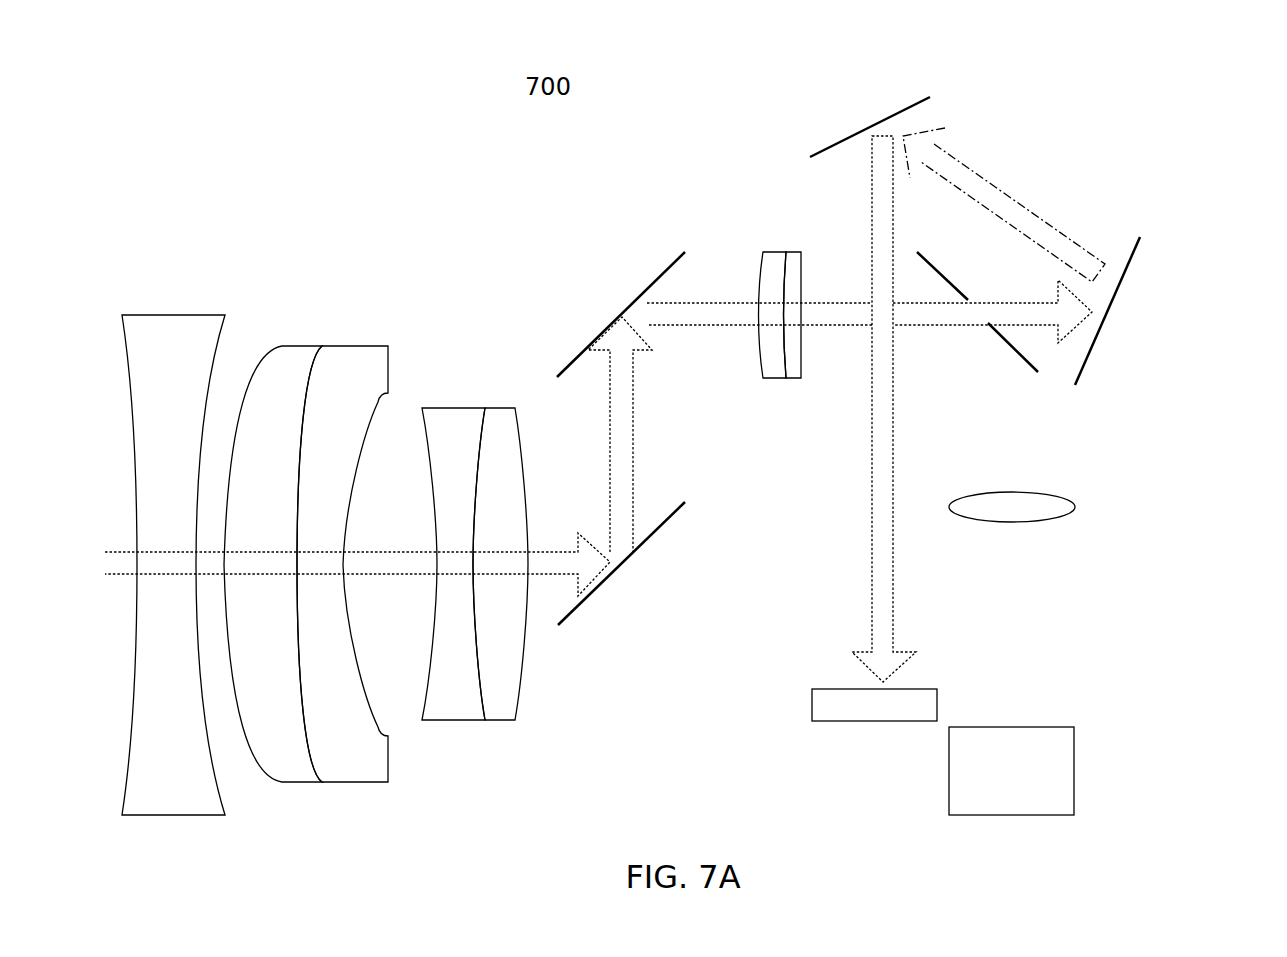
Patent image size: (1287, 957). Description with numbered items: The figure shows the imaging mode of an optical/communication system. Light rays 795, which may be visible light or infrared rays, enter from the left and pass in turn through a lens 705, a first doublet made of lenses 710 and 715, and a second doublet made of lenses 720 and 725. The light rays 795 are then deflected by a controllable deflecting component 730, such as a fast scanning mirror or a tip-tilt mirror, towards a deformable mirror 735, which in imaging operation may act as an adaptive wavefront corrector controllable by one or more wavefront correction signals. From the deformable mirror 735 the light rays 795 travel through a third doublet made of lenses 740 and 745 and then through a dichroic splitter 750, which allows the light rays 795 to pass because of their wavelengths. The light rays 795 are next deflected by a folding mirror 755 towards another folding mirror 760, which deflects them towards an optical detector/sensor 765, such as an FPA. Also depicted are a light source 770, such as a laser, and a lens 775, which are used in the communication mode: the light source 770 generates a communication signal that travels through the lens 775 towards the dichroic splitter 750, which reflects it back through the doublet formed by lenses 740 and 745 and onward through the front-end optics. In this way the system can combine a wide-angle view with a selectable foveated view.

The lens 705 is at (140, 311).
The lens 710 is at (292, 341).
The lens 715 is at (364, 341).
The lens 720 is at (435, 403).
The lens 725 is at (491, 403).
The controllable deflecting component 730 is at (566, 628).
The deformable mirror 735 is at (670, 261).
The lens 740 is at (770, 248).
The lens 745 is at (793, 248).
The dichroic splitter 750 is at (1036, 378).
The folding mirror 755 is at (1139, 233).
The folding mirror 760 is at (929, 94).
The optical detector/sensor 765 is at (815, 686).
The light source 770 is at (1071, 725).
The lens 775 is at (1079, 507).
The light rays 795 is at (605, 405).